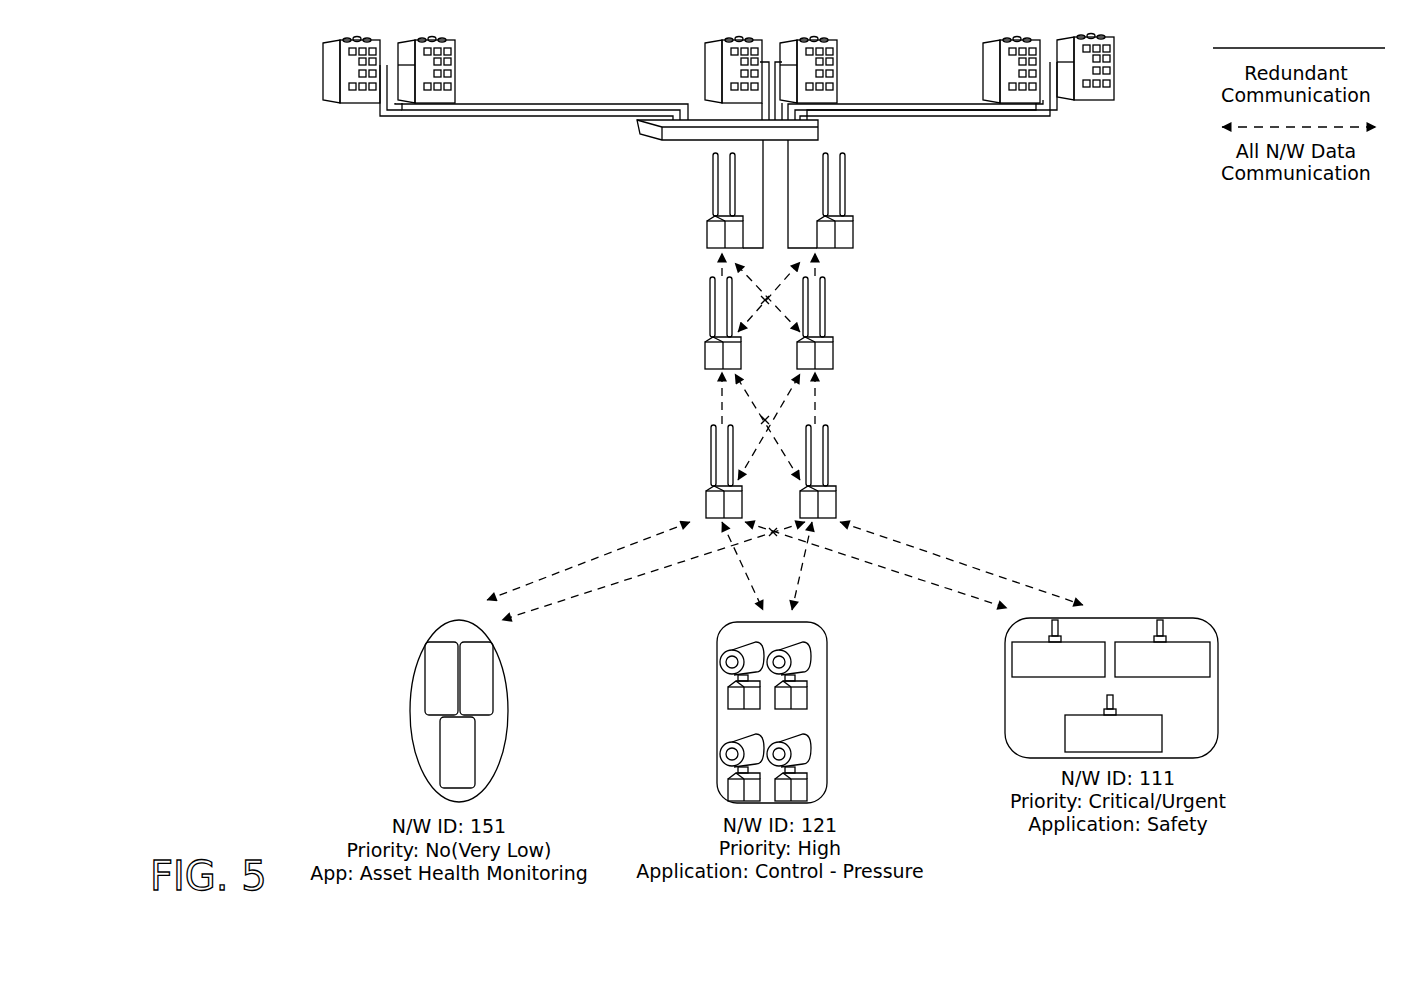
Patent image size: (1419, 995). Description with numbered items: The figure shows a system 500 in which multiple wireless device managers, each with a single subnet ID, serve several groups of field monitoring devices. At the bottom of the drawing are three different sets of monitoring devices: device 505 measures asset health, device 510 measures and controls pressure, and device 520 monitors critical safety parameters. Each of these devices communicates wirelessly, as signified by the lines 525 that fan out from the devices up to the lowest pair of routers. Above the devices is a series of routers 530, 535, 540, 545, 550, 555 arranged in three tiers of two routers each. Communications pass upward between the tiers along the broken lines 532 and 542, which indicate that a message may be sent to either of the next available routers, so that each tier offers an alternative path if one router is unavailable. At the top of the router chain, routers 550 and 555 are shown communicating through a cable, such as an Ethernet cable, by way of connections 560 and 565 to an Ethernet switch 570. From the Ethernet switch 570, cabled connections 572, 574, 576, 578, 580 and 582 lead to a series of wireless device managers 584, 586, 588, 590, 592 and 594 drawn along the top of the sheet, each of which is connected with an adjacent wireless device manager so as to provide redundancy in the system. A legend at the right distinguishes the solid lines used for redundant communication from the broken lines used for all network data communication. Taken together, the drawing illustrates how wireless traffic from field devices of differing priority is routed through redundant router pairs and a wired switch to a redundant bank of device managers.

The system 500 is at (258, 70).
The monitoring device 505 is at (458, 620).
The monitoring device 510 is at (740, 627).
The monitoring device 520 is at (1137, 618).
The lines signifying wireless communication 525 is at (958, 563).
The router 530 is at (837, 492).
The broken lines 532 is at (765, 417).
The router 535 is at (706, 490).
The router 540 is at (705, 350).
The broken lines 542 is at (765, 297).
The router 545 is at (833, 350).
The router 550 is at (853, 229).
The router 555 is at (707, 229).
The wired connection 560 is at (788, 192).
The wired connection 565 is at (762, 162).
The Ethernet switch 570 is at (638, 127).
The network connection 572 is at (486, 116).
The network connection 574 is at (543, 104).
The network connection 576 is at (766, 118).
The network connection 578 is at (783, 60).
The network connection 580 is at (945, 104).
The network connection 582 is at (888, 117).
The controller/server 584 is at (1107, 36).
The wireless device manager 586 is at (991, 40).
The wireless device manager 588 is at (830, 40).
The wireless device manager 590 is at (717, 40).
The wireless device manager 592 is at (437, 40).
The wireless device manager 594 is at (336, 40).